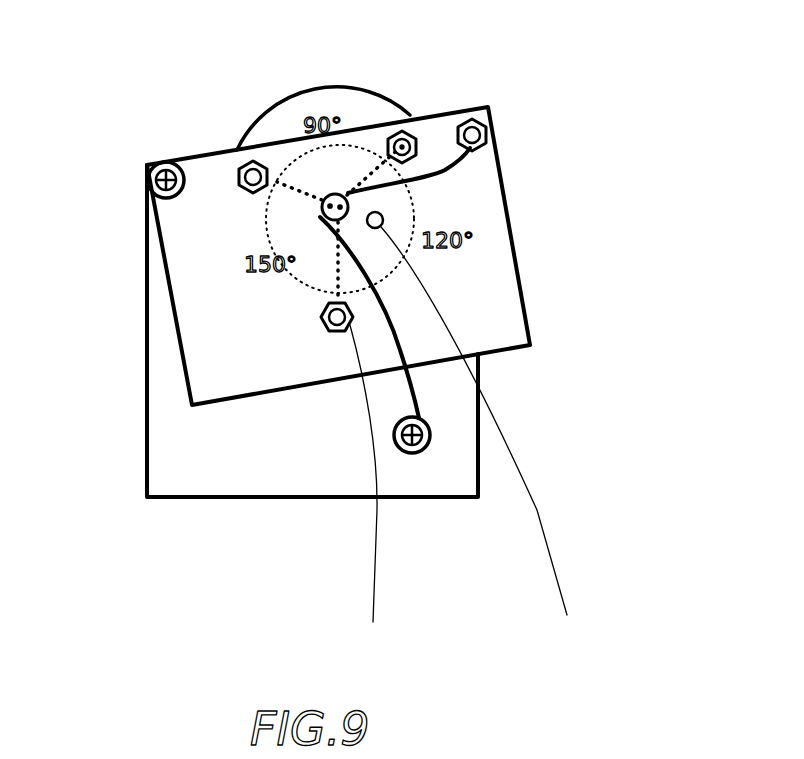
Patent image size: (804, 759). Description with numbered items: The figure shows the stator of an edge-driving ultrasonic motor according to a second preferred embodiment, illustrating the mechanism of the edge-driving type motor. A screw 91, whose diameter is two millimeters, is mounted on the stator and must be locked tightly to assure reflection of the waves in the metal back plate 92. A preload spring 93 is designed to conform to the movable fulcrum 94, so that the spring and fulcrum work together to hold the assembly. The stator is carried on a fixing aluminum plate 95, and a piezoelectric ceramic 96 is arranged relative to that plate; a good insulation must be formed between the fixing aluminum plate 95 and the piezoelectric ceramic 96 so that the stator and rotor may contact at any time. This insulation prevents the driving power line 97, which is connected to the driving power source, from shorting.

The screw 91 is at (245, 158).
The metal back plate 92 is at (365, 86).
The preload spring 93 is at (492, 218).
The movable fulcrum 94 is at (155, 162).
The fixing aluminum plate 95 is at (165, 400).
The piezoelectric ceramic 96 is at (277, 235).
The driving power line 97 is at (545, 594).